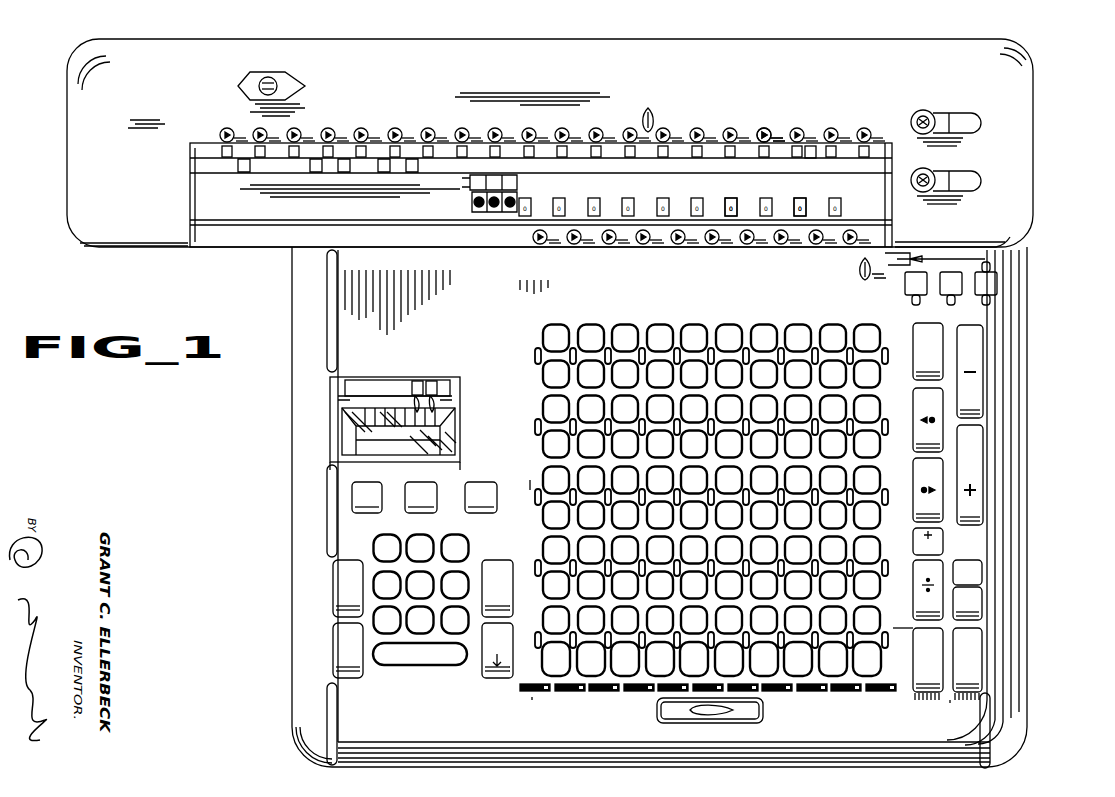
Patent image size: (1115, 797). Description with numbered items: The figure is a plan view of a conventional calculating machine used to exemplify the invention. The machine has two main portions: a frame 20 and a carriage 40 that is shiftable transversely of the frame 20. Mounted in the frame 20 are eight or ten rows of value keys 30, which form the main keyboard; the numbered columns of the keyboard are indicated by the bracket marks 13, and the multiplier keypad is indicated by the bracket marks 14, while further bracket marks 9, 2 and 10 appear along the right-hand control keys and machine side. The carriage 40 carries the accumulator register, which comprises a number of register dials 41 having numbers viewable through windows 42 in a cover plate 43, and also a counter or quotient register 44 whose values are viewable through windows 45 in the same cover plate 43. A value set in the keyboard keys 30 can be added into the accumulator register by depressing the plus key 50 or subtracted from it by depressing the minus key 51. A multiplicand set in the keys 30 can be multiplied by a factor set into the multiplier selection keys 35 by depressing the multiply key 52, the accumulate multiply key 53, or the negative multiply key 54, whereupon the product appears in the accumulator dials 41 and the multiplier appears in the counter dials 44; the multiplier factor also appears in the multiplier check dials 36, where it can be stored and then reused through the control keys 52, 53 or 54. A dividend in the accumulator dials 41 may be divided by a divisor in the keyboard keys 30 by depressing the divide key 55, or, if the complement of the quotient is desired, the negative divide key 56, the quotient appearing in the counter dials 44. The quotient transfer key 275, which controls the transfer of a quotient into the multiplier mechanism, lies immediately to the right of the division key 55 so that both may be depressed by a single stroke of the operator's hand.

The register bracket 2 is at (905, 625).
The clearing key bracket 9 is at (905, 569).
The machine side bar 10 is at (972, 524).
The keyboard column bracket 13 is at (496, 465).
The multiplier keyboard 14 is at (442, 669).
The frame 20 is at (1035, 392).
The value keys 30 is at (701, 327).
The multiplier selection keys 35 is at (415, 632).
The multiplier check dials 36 is at (397, 430).
The carriage 40 is at (1040, 72).
The register dials 41 is at (770, 138).
The windows 42 is at (810, 150).
The cover plate 43 is at (562, 83).
The counter or quotient register 44 is at (797, 214).
The windows 45 is at (740, 214).
The plus key 50 is at (968, 466).
The minus key 51 is at (972, 340).
The multiply key 52 is at (494, 678).
The accumulate multiply key 53 is at (336, 626).
The negative multiply key 54 is at (348, 566).
The divide key 55 is at (935, 580).
The negative divide key 56 is at (940, 540).
The quotient transfer key 275 is at (975, 613).